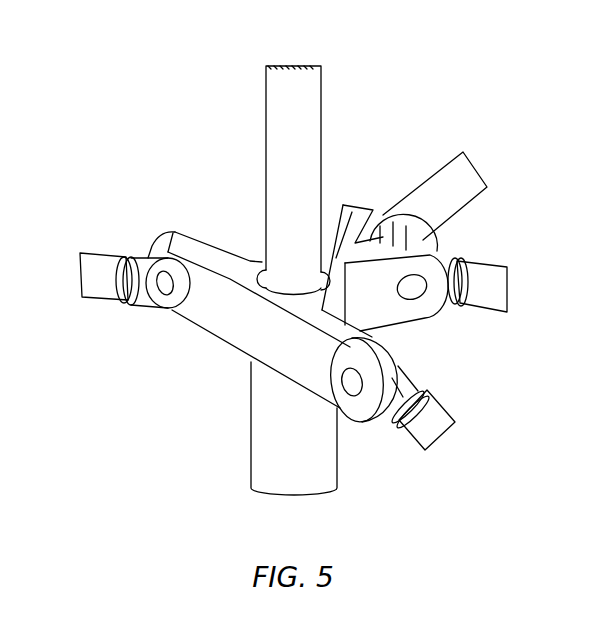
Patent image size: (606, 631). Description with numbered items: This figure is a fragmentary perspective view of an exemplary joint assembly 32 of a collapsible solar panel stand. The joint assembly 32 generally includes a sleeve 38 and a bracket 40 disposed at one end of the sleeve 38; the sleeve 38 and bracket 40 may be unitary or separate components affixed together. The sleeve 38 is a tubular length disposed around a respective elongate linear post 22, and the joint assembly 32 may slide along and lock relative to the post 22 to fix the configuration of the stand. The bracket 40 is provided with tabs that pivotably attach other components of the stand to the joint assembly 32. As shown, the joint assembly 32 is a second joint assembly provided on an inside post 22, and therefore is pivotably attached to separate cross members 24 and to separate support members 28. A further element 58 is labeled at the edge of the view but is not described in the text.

The elongate linear post 22 is at (303, 100).
The cross member 24 is at (102, 275).
The support member 28 is at (455, 173).
The joint assembly 32 is at (170, 212).
The sleeve 38 is at (270, 425).
The bracket 40 is at (233, 327).
The frame member 58 is at (0, 542).